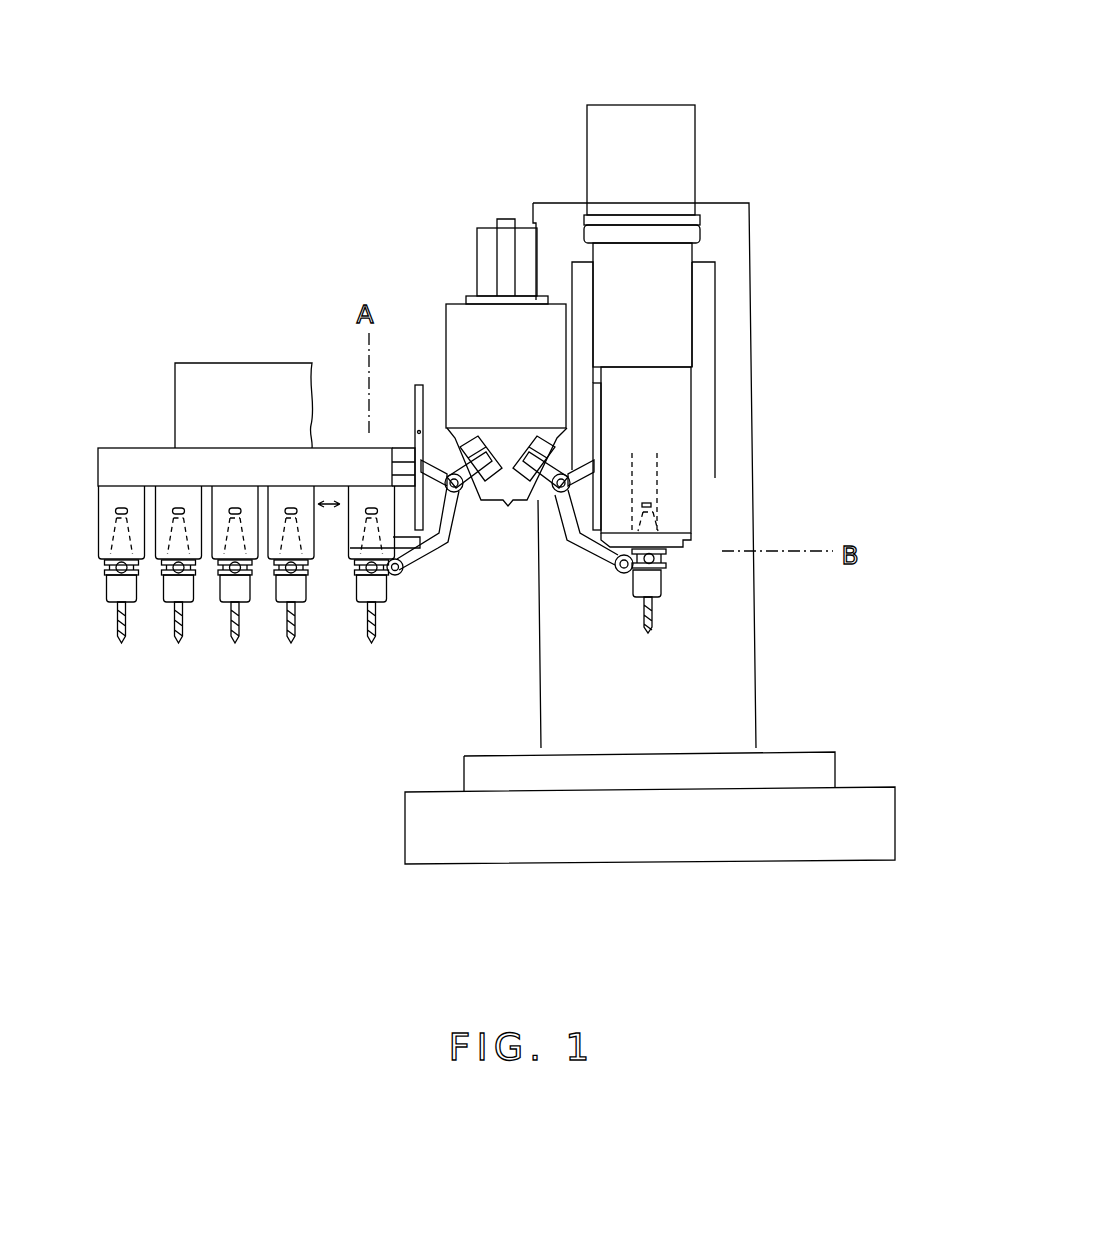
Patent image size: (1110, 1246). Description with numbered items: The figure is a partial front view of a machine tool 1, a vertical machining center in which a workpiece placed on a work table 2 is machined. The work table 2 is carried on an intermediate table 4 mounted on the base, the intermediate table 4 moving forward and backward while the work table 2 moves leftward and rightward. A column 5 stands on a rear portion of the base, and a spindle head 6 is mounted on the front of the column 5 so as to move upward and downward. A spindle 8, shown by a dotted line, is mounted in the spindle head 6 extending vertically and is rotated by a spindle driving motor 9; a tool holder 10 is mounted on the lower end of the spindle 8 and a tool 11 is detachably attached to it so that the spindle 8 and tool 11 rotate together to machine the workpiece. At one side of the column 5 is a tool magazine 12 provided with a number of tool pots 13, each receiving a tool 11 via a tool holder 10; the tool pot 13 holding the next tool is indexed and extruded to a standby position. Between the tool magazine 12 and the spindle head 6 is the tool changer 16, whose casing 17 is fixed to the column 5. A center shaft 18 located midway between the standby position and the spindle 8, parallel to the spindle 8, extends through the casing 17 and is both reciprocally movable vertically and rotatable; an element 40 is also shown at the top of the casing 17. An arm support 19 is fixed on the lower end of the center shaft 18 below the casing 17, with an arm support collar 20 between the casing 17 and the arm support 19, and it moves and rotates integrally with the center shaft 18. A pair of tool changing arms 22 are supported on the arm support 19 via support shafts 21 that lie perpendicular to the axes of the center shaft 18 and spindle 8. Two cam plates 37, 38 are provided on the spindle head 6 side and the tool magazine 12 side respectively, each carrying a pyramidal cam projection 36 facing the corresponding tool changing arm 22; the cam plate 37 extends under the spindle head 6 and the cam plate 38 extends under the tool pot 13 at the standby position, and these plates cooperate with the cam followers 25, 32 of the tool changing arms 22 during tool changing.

The machine tool 1 is at (740, 147).
The work table 2 is at (817, 750).
The intermediate table 4 is at (875, 787).
The column 5 is at (751, 235).
The spindle head 6 is at (677, 388).
The spindle 8 is at (657, 460).
The spindle driving motor 9 is at (657, 115).
The tool holder 10 is at (108, 590).
The tool 11 is at (117, 627).
The tool magazine 12 is at (114, 437).
The tool pot 13 is at (98, 518).
The tool changer 16 is at (475, 217).
The casing 17 is at (446, 315).
The center shaft 18 is at (508, 218).
The arm support 19 is at (508, 498).
The arm support collar 20 is at (505, 442).
The support shaft 21 is at (455, 495).
The tool changing arm 22 is at (437, 548).
The cam follower 25 is at (590, 417).
The cam follower 32 is at (398, 575).
The cam projection 36 is at (430, 490).
The cam plate 37 is at (592, 352).
The cam plate 38 is at (412, 387).
The cylinder 40 is at (477, 238).